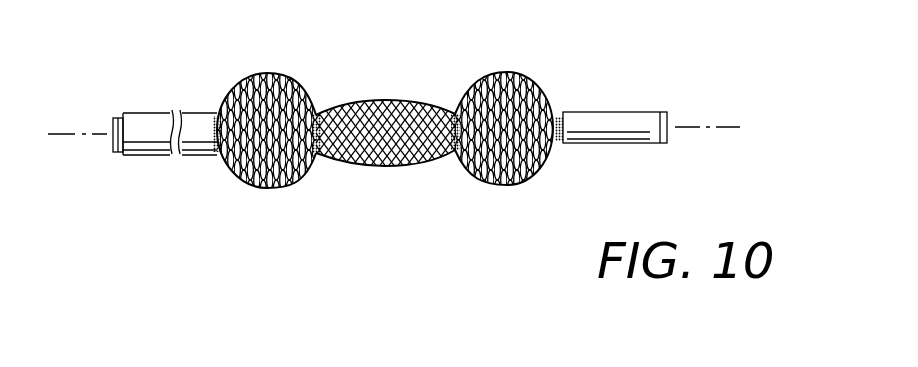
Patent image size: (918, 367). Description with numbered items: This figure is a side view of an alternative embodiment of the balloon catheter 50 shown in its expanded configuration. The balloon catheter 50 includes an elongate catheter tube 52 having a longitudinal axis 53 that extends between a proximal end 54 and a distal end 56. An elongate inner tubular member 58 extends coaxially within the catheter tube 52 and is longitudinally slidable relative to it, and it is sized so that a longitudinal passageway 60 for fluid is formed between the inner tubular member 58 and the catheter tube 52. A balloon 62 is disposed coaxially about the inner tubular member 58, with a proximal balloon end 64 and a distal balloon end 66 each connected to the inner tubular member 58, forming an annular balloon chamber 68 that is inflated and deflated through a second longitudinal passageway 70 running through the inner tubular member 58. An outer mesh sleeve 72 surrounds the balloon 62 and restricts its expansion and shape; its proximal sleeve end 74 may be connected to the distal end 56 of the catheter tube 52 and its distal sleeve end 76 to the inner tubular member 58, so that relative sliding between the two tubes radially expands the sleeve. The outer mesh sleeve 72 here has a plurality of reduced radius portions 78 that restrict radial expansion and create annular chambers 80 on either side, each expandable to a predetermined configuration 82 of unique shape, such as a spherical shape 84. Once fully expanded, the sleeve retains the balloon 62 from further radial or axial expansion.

The balloon catheter 50 is at (312, 74).
The catheter tube 52 is at (148, 158).
The longitudinal axis 53 is at (688, 125).
The proximal end 54 is at (218, 158).
The distal end 56 is at (548, 166).
The inner tubular member 58 is at (114, 158).
The longitudinal passageway 60 is at (118, 112).
The balloon 62 is at (293, 188).
The proximal balloon end 64 is at (224, 91).
The distal balloon end 66 is at (548, 100).
The annular balloon chamber 68 is at (312, 158).
The second longitudinal passageway 70 is at (115, 148).
The outer mesh sleeve 72 is at (390, 100).
The proximal sleeve end 74 is at (215, 158).
The distal sleeve end 76 is at (562, 148).
The reduced radius portion 78 is at (318, 110).
The annular chamber 80 is at (485, 185).
The predetermined configuration 82 is at (398, 167).
The spherical shape 84 is at (262, 190).